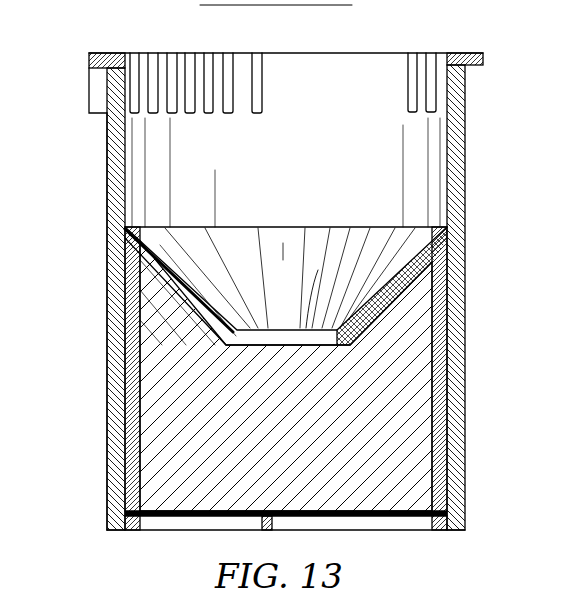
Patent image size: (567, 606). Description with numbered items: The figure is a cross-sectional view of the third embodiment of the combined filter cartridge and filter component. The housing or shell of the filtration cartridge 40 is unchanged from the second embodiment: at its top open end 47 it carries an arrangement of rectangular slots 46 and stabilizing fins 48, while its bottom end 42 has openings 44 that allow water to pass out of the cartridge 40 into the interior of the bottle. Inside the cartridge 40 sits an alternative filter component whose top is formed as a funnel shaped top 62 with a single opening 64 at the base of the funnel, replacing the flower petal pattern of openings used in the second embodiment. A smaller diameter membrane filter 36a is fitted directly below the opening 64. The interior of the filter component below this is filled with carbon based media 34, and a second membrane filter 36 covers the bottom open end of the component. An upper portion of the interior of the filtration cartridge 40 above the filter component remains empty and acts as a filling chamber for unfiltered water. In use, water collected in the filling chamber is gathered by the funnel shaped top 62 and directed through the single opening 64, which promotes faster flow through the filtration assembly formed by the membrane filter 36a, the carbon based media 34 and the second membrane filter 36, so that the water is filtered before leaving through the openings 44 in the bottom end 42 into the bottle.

The carbon based media 34 is at (362, 392).
The membrane filter 36 is at (177, 530).
The smaller diameter membrane filter 36a is at (245, 358).
The filtration cartridge 40 is at (108, 273).
The bottom end 42 is at (108, 528).
The openings 44 is at (360, 520).
The rectangular slots 46 is at (190, 70).
The top open end 47 is at (343, 53).
The stabilizing fins 48 is at (97, 113).
The funnel shaped top 62 is at (283, 243).
The single opening 64 is at (318, 270).